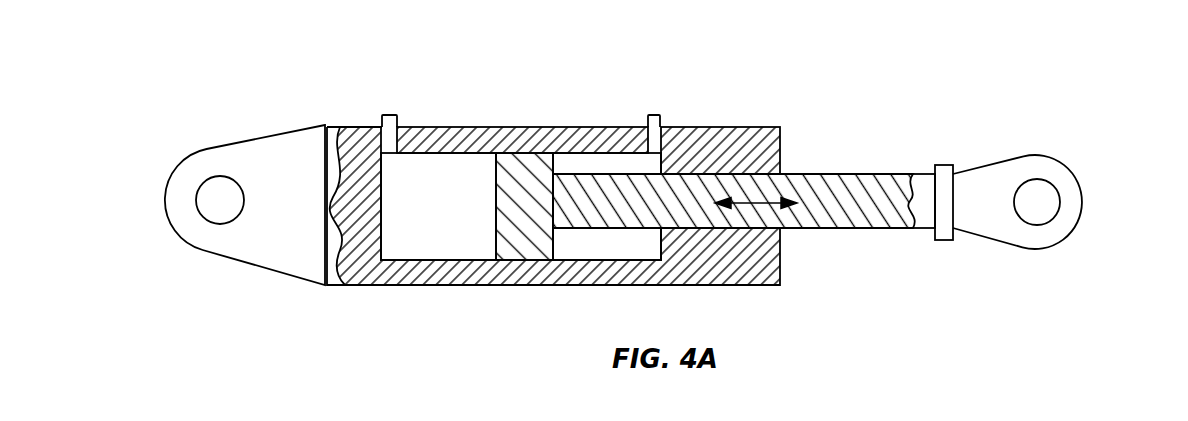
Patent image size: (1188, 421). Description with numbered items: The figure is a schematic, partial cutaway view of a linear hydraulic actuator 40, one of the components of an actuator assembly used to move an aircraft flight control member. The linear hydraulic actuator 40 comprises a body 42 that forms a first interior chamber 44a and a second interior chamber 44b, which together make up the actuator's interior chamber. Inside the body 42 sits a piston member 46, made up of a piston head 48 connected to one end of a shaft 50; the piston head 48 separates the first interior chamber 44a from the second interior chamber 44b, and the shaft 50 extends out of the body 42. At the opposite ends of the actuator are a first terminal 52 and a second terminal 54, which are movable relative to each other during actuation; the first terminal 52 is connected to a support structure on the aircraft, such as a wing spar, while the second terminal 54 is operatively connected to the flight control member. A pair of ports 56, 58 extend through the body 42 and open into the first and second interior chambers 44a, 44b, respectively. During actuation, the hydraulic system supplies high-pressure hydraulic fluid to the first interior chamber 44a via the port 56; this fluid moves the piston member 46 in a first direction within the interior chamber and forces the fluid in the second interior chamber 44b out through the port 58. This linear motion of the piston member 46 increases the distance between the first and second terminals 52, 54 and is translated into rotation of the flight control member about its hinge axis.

The linear hydraulic actuator 40 is at (630, 166).
The body 42 is at (713, 132).
The first interior chamber 44a is at (433, 173).
The second interior chamber 44b is at (568, 160).
The piston member 46 is at (608, 250).
The piston head 48 is at (520, 167).
The shaft 50 is at (832, 174).
The first terminal 52 is at (237, 260).
The second terminal 54 is at (1038, 252).
The port 56 is at (390, 113).
The port 58 is at (655, 112).